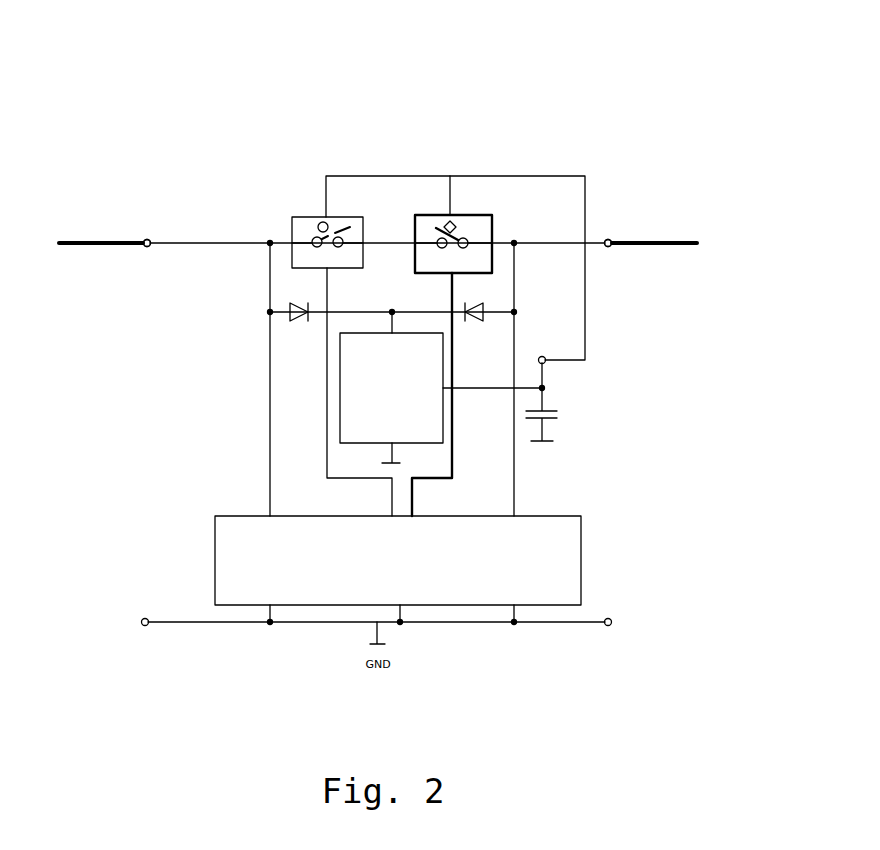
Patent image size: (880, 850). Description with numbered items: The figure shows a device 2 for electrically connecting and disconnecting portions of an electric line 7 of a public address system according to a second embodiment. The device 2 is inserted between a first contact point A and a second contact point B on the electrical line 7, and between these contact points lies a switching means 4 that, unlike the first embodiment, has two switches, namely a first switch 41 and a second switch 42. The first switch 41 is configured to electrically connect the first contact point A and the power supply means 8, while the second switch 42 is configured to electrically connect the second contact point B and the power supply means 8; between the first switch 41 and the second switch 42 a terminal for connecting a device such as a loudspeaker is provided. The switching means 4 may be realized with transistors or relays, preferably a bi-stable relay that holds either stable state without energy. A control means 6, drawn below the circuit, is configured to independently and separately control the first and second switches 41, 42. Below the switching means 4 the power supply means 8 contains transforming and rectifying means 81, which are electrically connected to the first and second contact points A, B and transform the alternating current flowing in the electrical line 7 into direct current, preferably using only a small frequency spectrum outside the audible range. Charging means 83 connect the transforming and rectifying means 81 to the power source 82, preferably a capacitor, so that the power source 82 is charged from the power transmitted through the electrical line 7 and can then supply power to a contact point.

The device 2 is at (452, 83).
The switching means 4 is at (415, 180).
The first switch 41 is at (300, 213).
The second switch 42 is at (480, 213).
The control means 6 is at (562, 515).
The electrical line 7 is at (72, 237).
The power supply means 8 is at (588, 285).
The transforming and rectifying means 81 is at (362, 412).
The power source 82 is at (550, 408).
The charging means 83 is at (467, 382).
The first contact point A is at (152, 238).
The second contact point B is at (618, 240).